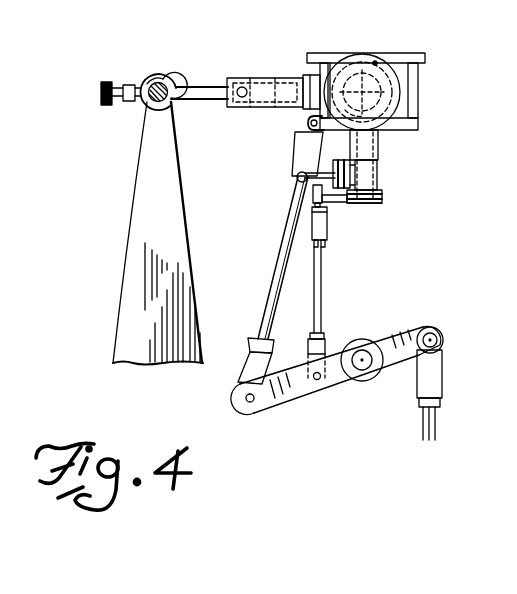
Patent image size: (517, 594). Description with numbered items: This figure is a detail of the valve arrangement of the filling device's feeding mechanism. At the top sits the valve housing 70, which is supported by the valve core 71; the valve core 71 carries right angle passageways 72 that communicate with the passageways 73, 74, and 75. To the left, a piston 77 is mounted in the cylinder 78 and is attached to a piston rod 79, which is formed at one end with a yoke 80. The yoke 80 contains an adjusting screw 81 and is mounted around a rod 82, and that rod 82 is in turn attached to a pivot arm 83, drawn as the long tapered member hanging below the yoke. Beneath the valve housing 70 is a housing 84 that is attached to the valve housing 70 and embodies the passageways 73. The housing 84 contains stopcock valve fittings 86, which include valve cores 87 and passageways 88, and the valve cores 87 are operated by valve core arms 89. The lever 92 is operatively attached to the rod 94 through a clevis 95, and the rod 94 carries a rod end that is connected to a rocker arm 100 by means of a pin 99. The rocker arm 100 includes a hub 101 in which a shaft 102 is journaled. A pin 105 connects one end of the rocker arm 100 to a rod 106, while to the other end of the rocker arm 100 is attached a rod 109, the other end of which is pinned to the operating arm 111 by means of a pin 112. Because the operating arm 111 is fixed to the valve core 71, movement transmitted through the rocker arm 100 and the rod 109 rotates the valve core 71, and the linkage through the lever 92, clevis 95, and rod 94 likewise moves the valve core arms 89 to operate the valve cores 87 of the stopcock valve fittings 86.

The valve housing 70 is at (417, 72).
The valve core 71 is at (400, 102).
The right angle passageways 72 is at (399, 87).
The passageways 73 is at (378, 145).
The passageways 74 is at (332, 62).
The passageways 75 is at (376, 63).
The piston 77 is at (262, 78).
The cylinder 78 is at (237, 108).
The piston rod 79 is at (197, 86).
The yoke 80 is at (157, 74).
The adjusting screw 81 is at (105, 81).
The rod 82 is at (151, 100).
The pivot arm 83 is at (158, 233).
The housing 84 is at (378, 159).
The stopcock valve fittings 86 is at (371, 202).
The valve cores 87 is at (380, 196).
The passageways 88 is at (367, 181).
The valve core arms 89 is at (297, 177).
The lever 92 is at (313, 200).
The rod 94 is at (322, 286).
The clevis 95 is at (328, 229).
The pin 99 is at (314, 380).
The rocker arm 100 is at (330, 391).
The hub 101 is at (370, 374).
The shaft 102 is at (362, 371).
The pin 105 is at (437, 339).
The rod 106 is at (436, 429).
The rod 109 is at (272, 272).
The operating arm 111 is at (310, 118).
The pin 112 is at (308, 129).